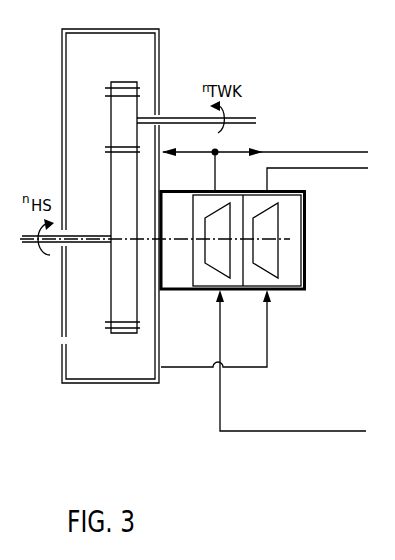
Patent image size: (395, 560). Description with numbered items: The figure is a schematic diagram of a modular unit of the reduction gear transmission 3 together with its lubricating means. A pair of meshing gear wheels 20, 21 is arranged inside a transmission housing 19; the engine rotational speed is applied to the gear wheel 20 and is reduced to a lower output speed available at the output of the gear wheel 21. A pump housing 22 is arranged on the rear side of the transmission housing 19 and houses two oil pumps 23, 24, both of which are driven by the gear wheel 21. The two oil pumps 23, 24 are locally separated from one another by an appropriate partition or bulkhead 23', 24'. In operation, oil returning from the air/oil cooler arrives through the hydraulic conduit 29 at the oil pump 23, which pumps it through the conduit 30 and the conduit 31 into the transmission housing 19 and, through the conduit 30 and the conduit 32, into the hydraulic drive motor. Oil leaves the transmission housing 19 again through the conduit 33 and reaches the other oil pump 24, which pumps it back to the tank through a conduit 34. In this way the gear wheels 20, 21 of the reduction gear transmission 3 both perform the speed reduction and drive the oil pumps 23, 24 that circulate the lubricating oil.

The reduction gear transmission 3 is at (53, 355).
The transmission housing 19 is at (63, 74).
The gear wheel 20 is at (120, 121).
The gear wheel 21 is at (118, 280).
The pump housing 22 is at (296, 292).
The oil pump 23 is at (206, 269).
The partition 23' is at (176, 213).
The oil pump 24 is at (303, 243).
The partition 24' is at (243, 306).
The hydraulic conduit 29 is at (305, 432).
The conduit 30 is at (218, 186).
The conduit 31 is at (192, 150).
The conduit 32 is at (322, 152).
The conduit 33 is at (268, 354).
The conduit 34 is at (327, 169).